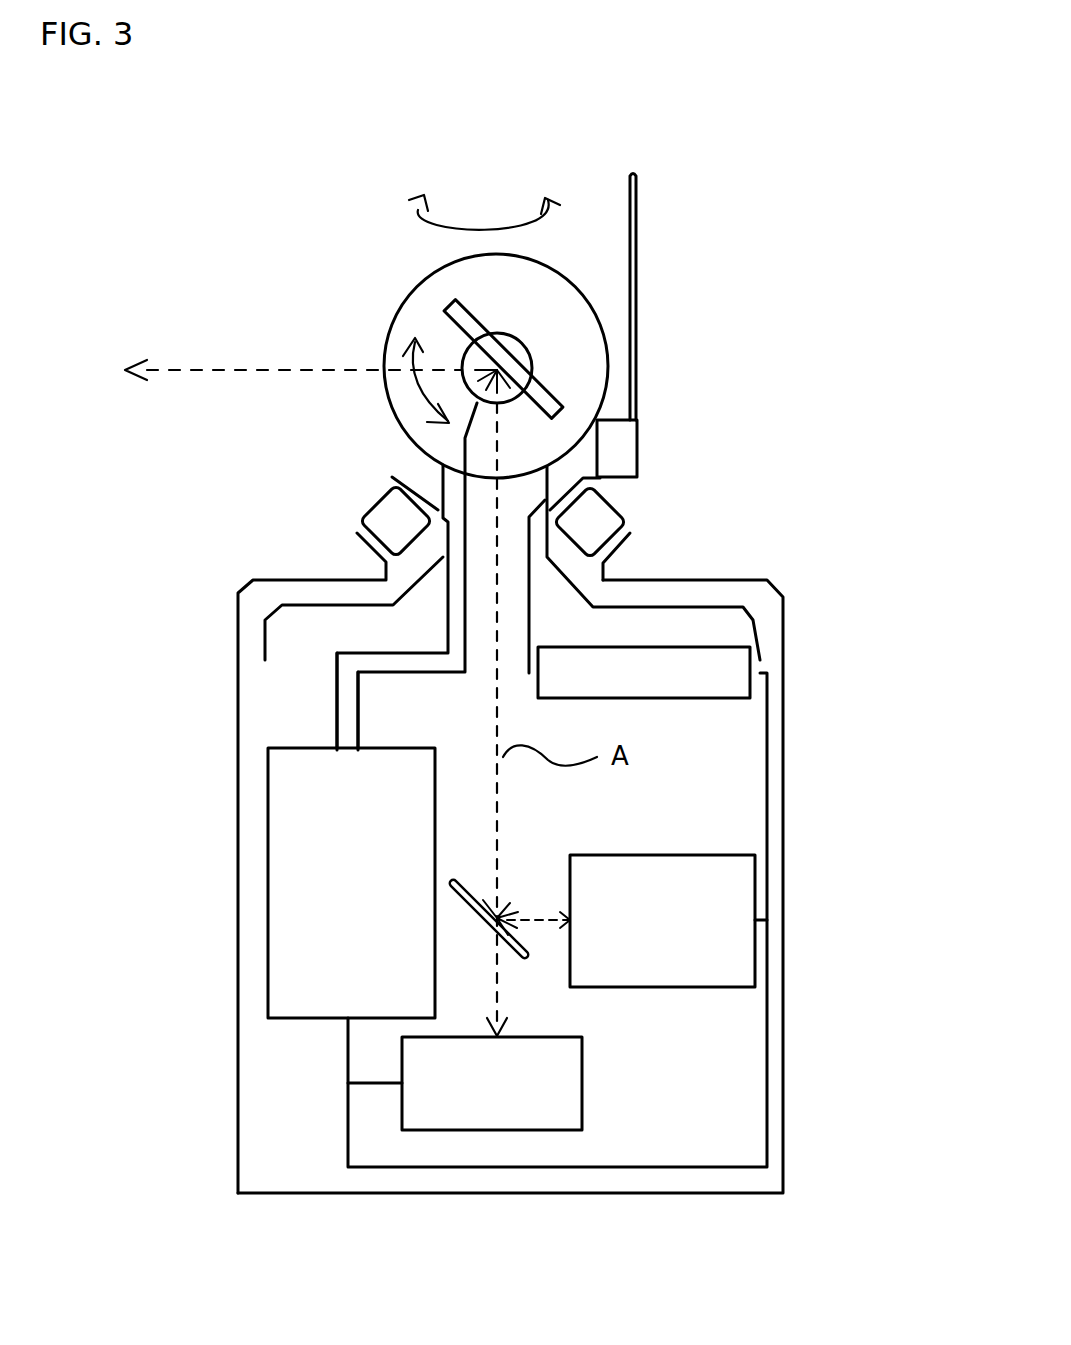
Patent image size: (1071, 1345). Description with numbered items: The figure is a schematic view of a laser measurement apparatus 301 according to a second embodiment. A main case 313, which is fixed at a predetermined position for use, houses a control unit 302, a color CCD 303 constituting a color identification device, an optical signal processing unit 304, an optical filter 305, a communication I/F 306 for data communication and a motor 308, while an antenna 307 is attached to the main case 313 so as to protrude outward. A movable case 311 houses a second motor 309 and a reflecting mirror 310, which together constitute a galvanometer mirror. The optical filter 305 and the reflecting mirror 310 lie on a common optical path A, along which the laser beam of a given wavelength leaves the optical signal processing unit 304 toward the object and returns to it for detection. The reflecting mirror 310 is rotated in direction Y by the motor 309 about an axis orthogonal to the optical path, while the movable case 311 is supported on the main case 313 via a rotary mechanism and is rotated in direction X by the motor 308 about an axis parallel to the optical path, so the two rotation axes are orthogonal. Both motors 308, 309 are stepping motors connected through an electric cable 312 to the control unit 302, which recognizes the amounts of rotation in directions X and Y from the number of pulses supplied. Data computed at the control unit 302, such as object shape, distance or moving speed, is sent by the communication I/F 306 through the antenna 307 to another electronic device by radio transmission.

The laser measurement apparatus 301 is at (190, 593).
The control unit 302 is at (267, 877).
The color image detecting device (color CCD) 303 is at (488, 1132).
The optical signal processing unit 304 is at (758, 866).
The optical filter 305 is at (522, 905).
The communication interface (I/F) 306 is at (727, 650).
The antenna 307 is at (638, 268).
The motor 308 is at (367, 503).
The motor 309 is at (517, 333).
The reflecting mirror 310 is at (452, 300).
The movable case 311 is at (393, 303).
The electric cable 312 is at (357, 680).
The main case 313 is at (237, 769).